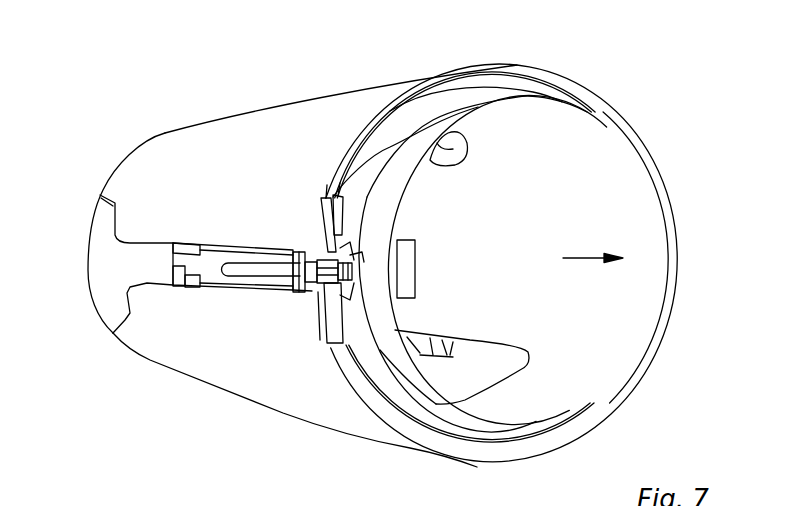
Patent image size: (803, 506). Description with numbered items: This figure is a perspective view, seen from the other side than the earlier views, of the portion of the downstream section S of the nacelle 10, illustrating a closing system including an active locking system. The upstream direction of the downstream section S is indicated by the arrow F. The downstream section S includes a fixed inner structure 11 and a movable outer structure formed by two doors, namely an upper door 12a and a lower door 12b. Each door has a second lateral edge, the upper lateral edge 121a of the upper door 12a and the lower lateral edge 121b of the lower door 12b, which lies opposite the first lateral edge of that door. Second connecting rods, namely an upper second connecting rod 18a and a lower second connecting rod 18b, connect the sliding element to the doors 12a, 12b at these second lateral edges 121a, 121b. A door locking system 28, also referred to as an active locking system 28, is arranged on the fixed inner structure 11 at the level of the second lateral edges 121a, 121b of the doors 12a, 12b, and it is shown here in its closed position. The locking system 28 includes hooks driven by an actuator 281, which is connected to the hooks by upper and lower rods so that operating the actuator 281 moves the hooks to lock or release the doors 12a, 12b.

The device 10 is at (266, 106).
The fixed inner structure 11 is at (438, 125).
The upper door 12a is at (165, 153).
The lower door 12b is at (203, 373).
The upper lateral edge 121a is at (190, 244).
The lower lateral edge 121b is at (228, 283).
The upper second connecting rod 18a is at (277, 247).
The lower second connecting rod 18b is at (287, 291).
The door locking system 28 is at (363, 251).
The actuator 281 is at (396, 379).
The downstream section S is at (606, 94).
The arrow F is at (582, 257).